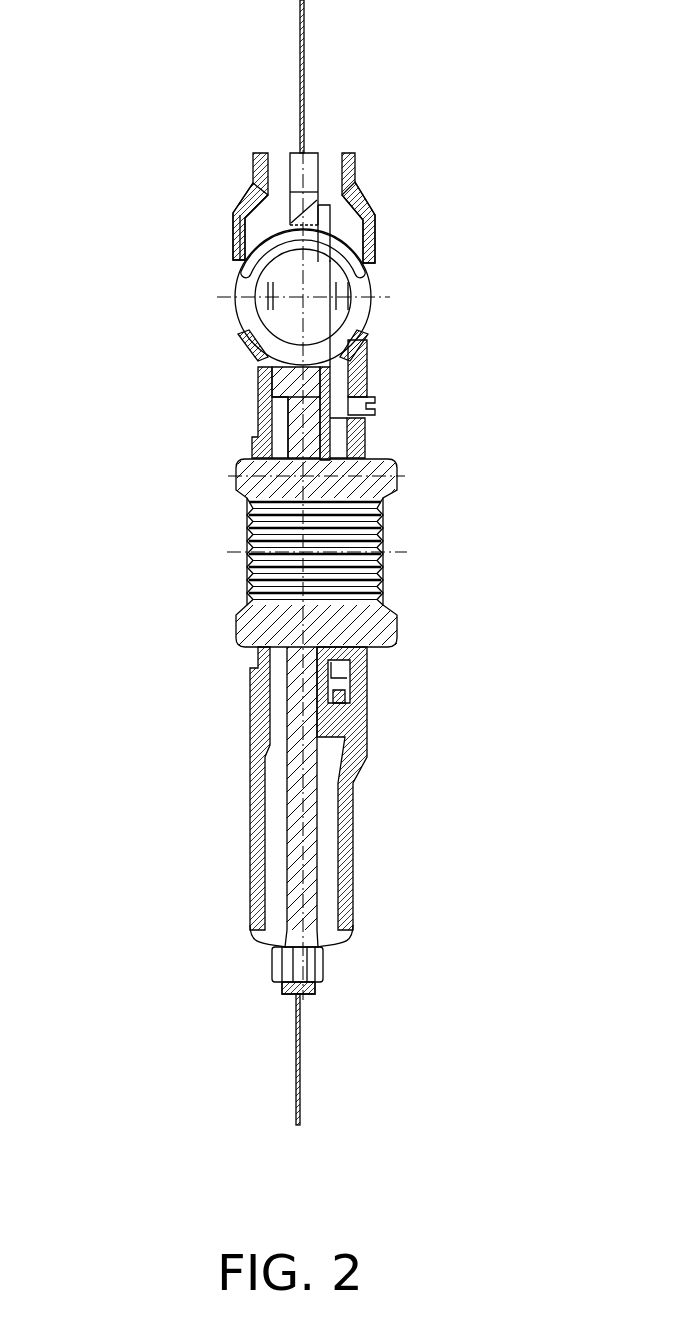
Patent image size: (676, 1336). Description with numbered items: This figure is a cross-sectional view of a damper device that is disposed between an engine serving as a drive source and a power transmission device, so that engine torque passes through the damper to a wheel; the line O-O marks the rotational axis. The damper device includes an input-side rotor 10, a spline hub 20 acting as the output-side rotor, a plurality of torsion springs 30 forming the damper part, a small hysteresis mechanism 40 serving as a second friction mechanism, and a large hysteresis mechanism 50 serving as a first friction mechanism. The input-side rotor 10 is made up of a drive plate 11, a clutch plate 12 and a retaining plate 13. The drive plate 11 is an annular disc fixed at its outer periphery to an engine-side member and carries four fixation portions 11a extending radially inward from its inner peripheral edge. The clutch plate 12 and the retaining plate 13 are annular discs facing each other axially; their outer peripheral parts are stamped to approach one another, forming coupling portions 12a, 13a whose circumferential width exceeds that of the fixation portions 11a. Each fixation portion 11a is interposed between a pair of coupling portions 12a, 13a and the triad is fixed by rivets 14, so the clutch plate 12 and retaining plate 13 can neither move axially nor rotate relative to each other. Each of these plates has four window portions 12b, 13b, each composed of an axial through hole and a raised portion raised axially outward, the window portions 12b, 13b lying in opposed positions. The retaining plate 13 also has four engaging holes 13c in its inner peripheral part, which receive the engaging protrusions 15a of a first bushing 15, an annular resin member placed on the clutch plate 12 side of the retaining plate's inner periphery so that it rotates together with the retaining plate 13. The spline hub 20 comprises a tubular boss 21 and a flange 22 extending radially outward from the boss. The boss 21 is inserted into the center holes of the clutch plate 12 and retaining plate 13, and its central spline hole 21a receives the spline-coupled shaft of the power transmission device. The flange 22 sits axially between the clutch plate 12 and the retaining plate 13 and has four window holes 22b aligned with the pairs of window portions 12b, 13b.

The input-side rotor 10 is at (350, 133).
The drive plate 11 is at (299, 16).
The fixation portions 11a is at (281, 983).
The clutch plate 12 is at (258, 172).
The coupling portions 12a is at (260, 938).
The window portions 12b is at (255, 227).
The retaining plate 13 is at (347, 173).
The coupling portions 13a is at (347, 935).
The window portions 13b is at (373, 224).
The engaging holes 13c is at (367, 392).
The rivets 14 is at (320, 968).
The first bushing 15 is at (343, 380).
The engaging protrusions 15a is at (373, 400).
The spline hub 20 is at (406, 459).
The boss 21 is at (372, 640).
The spline hole 21a is at (248, 580).
The flange 22 is at (297, 703).
The window holes 22b is at (298, 280).
The torsion springs 30 is at (372, 277).
The small hysteresis mechanism 40 is at (268, 478).
The large hysteresis mechanism 50 is at (372, 328).